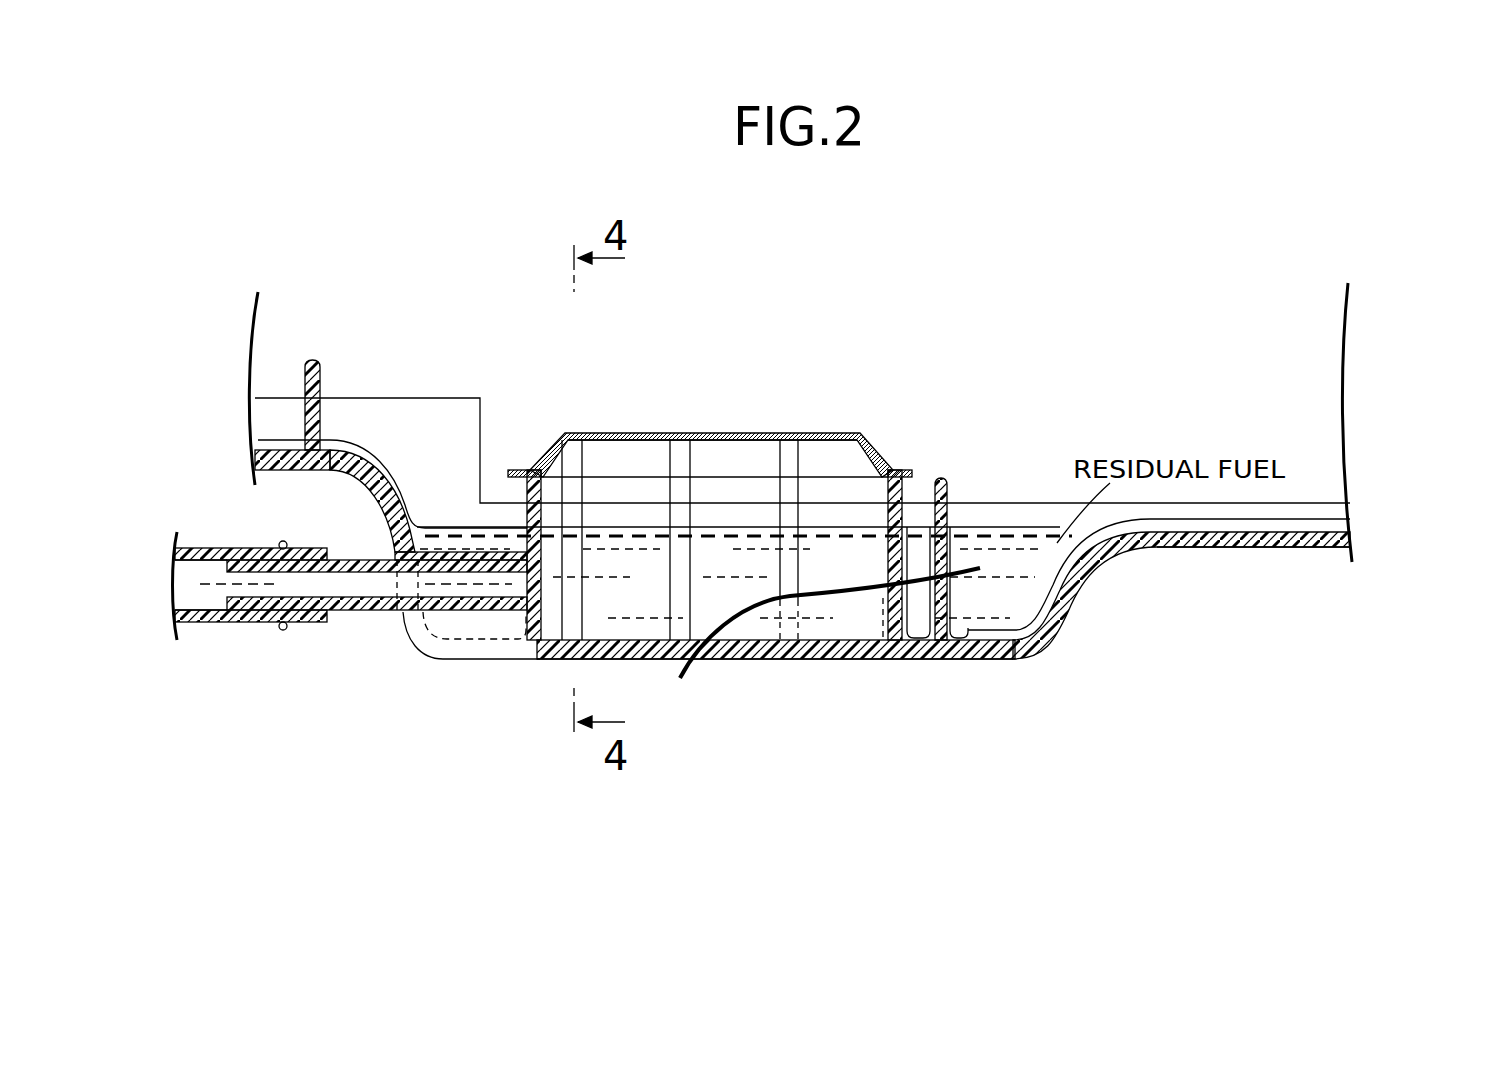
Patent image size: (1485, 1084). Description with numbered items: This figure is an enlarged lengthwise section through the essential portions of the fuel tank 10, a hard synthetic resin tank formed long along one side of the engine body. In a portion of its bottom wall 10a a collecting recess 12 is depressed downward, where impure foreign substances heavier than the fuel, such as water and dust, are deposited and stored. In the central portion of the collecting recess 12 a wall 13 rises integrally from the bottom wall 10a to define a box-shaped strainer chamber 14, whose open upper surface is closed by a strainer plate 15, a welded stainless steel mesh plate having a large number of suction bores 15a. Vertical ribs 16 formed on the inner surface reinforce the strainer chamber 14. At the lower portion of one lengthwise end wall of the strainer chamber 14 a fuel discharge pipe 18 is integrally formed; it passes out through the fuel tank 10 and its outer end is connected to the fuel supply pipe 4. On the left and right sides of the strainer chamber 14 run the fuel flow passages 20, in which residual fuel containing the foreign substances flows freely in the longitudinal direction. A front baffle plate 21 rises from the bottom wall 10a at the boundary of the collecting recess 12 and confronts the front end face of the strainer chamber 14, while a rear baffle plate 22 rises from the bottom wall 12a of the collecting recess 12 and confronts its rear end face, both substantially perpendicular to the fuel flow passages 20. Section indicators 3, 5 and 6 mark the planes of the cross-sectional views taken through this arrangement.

The section line 3- 3 is at (944, 292).
The fuel supply pipe 4 is at (226, 624).
The section line 5- 5 is at (316, 330).
The section line 6- 6 is at (255, 398).
The fuel tank 10 is at (1248, 547).
The bottom wall 10a is at (282, 470).
The collecting recess 12 is at (1001, 612).
The bottom wall of the collecting recess 12a is at (760, 660).
The wall 13 is at (524, 508).
The strainer chamber 14 is at (650, 600).
The strainer plate 15 is at (664, 433).
The suction bores 15a is at (814, 433).
The vertical ribs 16 is at (576, 586).
The fuel discharge pipe 18 is at (352, 602).
The fuel flow passages 20 is at (828, 628).
The front baffle plate 21 is at (321, 387).
The rear baffle plate 22 is at (948, 512).